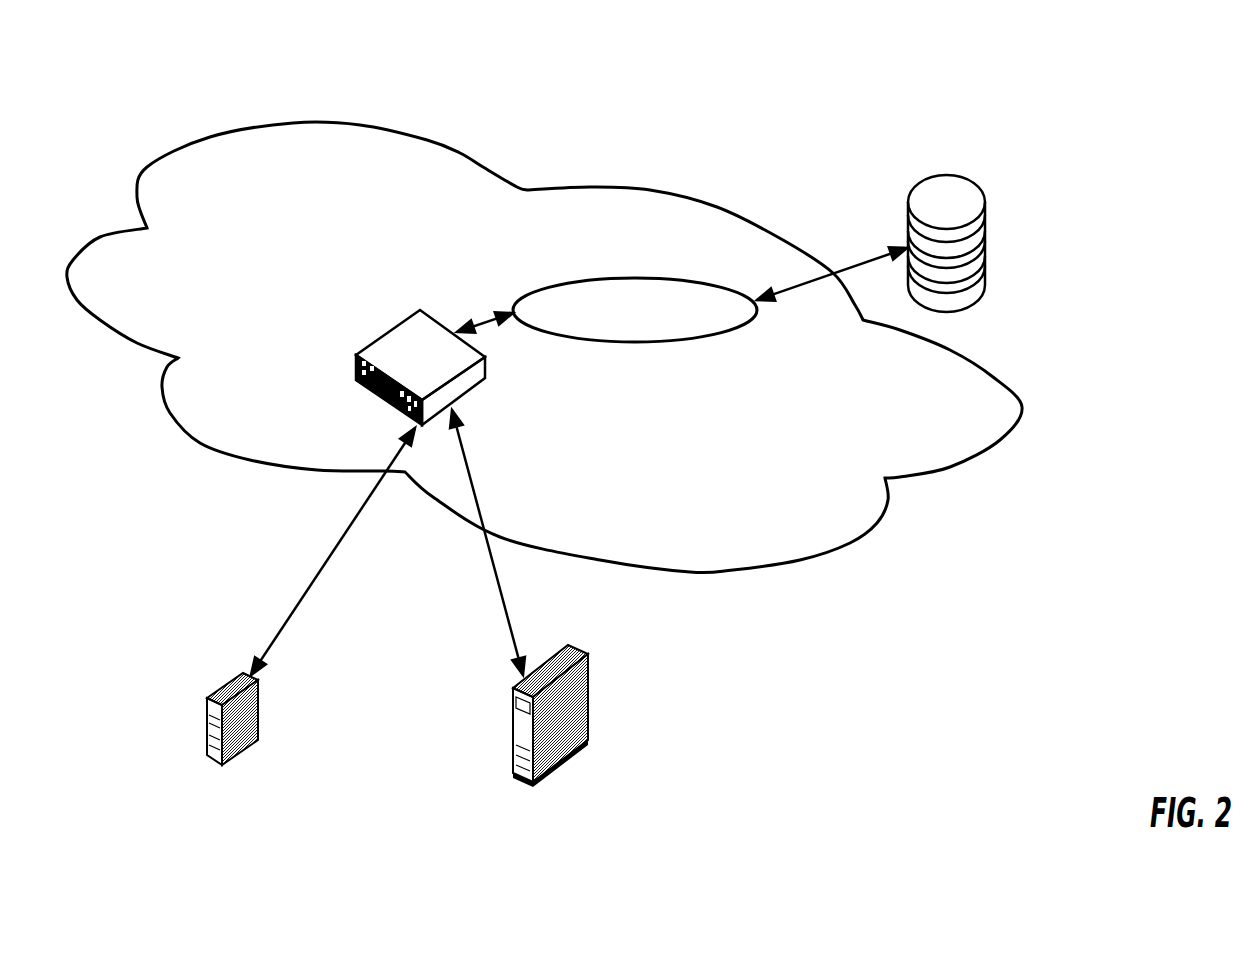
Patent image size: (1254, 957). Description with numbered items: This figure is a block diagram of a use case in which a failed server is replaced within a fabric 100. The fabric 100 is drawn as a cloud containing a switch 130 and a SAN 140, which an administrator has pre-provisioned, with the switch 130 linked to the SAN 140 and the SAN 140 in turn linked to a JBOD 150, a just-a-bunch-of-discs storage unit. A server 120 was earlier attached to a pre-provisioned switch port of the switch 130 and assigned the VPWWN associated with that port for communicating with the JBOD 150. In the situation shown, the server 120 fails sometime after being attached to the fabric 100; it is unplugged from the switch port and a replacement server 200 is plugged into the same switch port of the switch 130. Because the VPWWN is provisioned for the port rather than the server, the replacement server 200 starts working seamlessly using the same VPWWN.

The fabric 100 is at (544, 339).
The server 120 is at (287, 734).
The switch 130 is at (344, 409).
The SAN 140 is at (672, 254).
The JBOD 150 is at (1009, 214).
The replacement server 200 is at (592, 737).